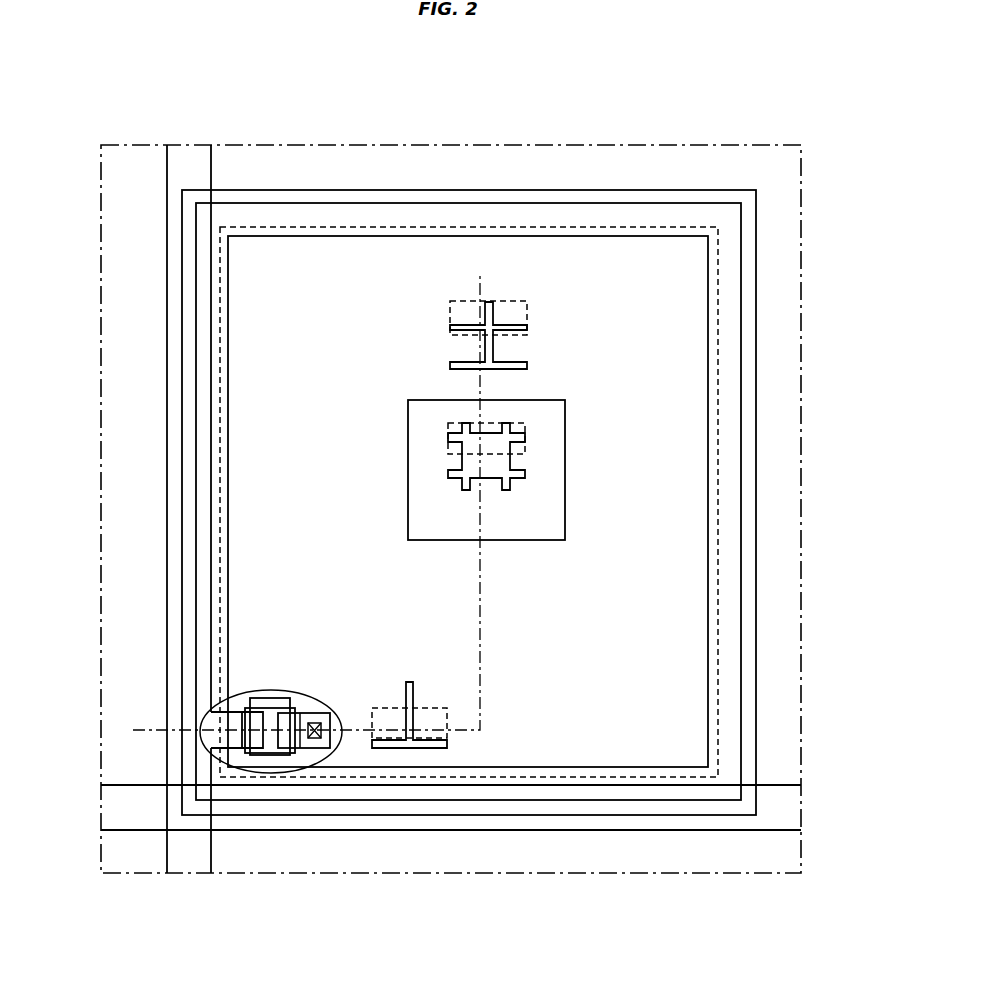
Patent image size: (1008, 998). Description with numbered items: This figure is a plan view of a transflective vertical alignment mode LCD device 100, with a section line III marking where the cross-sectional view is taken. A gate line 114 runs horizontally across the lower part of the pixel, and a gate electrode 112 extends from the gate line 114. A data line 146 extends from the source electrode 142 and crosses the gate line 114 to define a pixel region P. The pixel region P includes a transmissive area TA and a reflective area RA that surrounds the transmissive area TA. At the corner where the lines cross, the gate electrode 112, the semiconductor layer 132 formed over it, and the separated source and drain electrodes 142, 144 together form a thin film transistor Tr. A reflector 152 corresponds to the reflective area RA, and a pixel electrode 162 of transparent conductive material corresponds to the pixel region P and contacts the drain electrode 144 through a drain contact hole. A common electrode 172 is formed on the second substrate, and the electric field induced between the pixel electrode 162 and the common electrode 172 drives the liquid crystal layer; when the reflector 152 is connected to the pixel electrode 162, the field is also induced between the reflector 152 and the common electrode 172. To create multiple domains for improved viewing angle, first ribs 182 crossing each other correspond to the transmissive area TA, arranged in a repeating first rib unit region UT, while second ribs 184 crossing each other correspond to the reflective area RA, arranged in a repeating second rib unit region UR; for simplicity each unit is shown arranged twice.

The transflective VA mode LCD device 100 is at (708, 108).
The gate line 114 is at (138, 827).
The data line 146 is at (175, 552).
The gate electrode 112 is at (270, 698).
The semiconductor layer 132 is at (295, 708).
The source electrode 142 is at (255, 748).
The drain electrode 144 is at (285, 748).
The reflector 152 is at (755, 608).
The pixel electrode 162 is at (708, 697).
The common electrode 172 is at (802, 490).
The first ribs 182 is at (507, 490).
The second ribs 184 is at (527, 366).
The thin film transistor Tr is at (332, 760).
The pixel region P is at (718, 747).
The transmissive area TA is at (560, 472).
The reflective area RA is at (576, 659).
The first rib unit region UT is at (457, 422).
The second rib unit region UR is at (460, 302).
The section line III- III is at (480, 272).